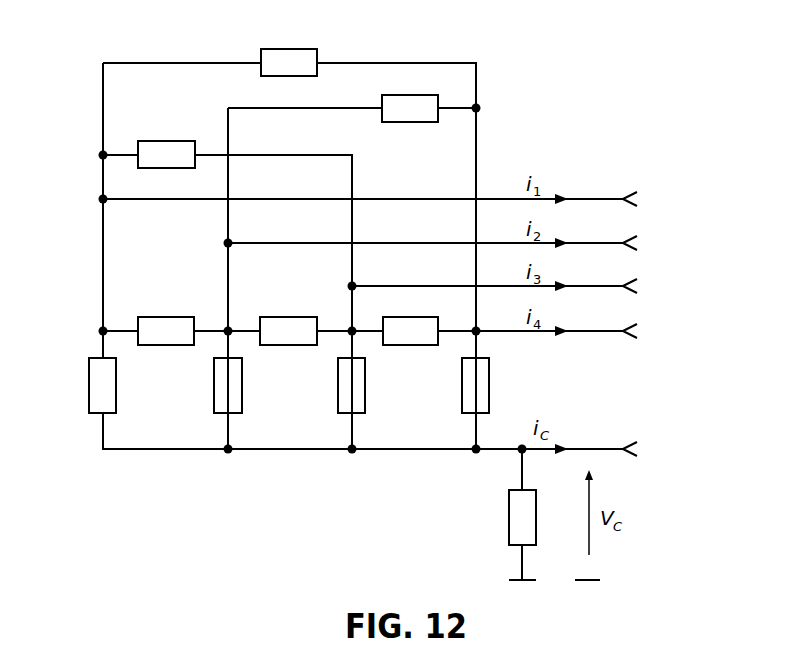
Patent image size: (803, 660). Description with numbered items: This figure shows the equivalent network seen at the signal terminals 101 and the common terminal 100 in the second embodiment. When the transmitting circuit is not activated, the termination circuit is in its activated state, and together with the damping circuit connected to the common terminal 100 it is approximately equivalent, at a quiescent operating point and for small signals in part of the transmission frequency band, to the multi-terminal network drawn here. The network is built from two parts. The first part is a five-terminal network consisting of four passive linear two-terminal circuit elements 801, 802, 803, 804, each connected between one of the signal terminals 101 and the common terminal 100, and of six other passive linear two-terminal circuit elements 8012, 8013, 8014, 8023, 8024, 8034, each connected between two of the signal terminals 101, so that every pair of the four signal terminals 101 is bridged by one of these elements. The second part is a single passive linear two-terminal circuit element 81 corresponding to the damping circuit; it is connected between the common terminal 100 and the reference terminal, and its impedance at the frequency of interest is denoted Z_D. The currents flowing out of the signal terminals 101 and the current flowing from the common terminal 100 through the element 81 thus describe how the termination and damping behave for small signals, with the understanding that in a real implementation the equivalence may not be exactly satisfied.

The passive linear two-terminal circuit element 8014 is at (292, 43).
The passive linear two-terminal circuit element 8013 is at (170, 138).
The passive linear two-terminal circuit element 8024 is at (413, 126).
The passive linear two-terminal circuit element 8012 is at (158, 349).
The passive linear two-terminal circuit element 8023 is at (290, 349).
The passive linear two-terminal circuit element 8034 is at (411, 349).
The passive linear two-terminal circuit element 801 is at (84, 398).
The passive linear two-terminal circuit element 802 is at (208, 397).
The passive linear two-terminal circuit element 803 is at (334, 397).
The passive linear two-terminal circuit element 804 is at (458, 399).
The passive linear two-terminal circuit element 81 is at (493, 532).
The signal terminal 101 is at (658, 192).
The common terminal 100 is at (663, 437).